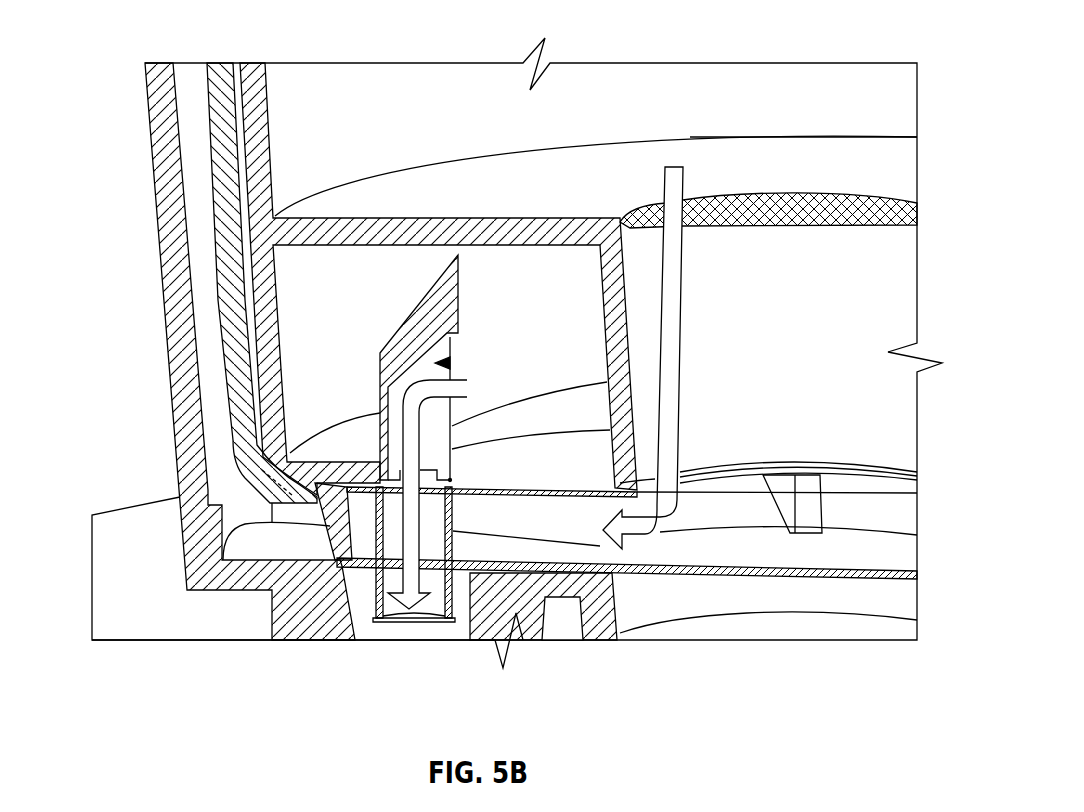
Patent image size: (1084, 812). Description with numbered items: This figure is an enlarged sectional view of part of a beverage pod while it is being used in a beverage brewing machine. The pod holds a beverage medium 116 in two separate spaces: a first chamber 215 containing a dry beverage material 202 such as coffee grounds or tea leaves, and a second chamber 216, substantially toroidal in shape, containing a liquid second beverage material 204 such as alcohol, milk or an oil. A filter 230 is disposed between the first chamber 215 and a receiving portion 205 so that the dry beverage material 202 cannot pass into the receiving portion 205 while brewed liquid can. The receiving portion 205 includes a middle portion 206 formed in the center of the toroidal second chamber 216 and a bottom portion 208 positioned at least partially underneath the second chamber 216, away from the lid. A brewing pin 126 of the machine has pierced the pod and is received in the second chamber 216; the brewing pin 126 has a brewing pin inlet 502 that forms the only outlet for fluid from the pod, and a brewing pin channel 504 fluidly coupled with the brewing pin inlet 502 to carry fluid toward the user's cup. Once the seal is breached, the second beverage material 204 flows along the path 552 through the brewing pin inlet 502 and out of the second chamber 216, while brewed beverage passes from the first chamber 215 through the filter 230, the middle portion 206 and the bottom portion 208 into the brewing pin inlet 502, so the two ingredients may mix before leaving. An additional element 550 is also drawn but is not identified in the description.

The beverage medium 116 is at (221, 320).
The dry beverage material 202 is at (348, 102).
The second beverage material 204 is at (292, 260).
The first chamber 215 is at (803, 114).
The second chamber 216 is at (568, 299).
The filter 230 is at (836, 202).
The rod 550 is at (677, 270).
The receiving portion 205 is at (803, 346).
The middle portion 206 is at (857, 346).
The bottom portion 208 is at (670, 547).
The brewing pin 126 is at (405, 335).
The brewing pin inlet 502 is at (450, 363).
The path 552 is at (460, 387).
The brewing pin channel 504 is at (430, 603).